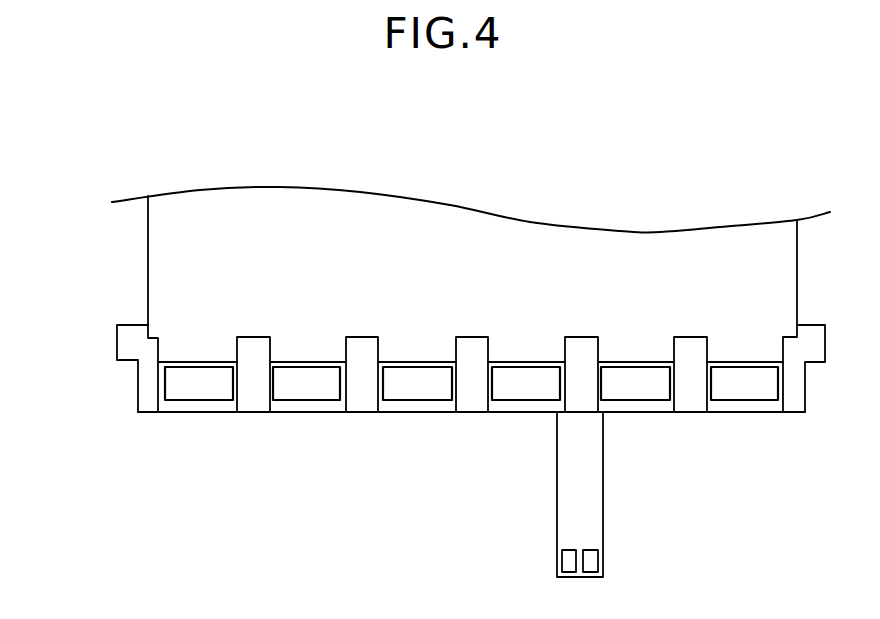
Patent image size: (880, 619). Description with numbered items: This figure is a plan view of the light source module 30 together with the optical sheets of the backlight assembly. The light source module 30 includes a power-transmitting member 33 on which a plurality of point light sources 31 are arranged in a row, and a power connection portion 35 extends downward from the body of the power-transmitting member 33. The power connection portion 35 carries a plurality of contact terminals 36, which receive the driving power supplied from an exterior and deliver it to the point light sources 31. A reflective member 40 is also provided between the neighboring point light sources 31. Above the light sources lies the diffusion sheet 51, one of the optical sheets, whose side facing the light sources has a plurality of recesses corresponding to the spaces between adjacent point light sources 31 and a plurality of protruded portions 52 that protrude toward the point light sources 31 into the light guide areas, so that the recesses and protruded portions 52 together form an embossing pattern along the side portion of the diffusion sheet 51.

The light source module 30 is at (470, 439).
The point light source 31 is at (184, 393).
The power-transmitting member 33 is at (229, 412).
The power connection portion 35 is at (598, 517).
The contact terminal 36 is at (598, 560).
The reflective member 40 is at (361, 393).
The diffusion sheet 51 is at (148, 258).
The protruded portion 52 is at (162, 336).